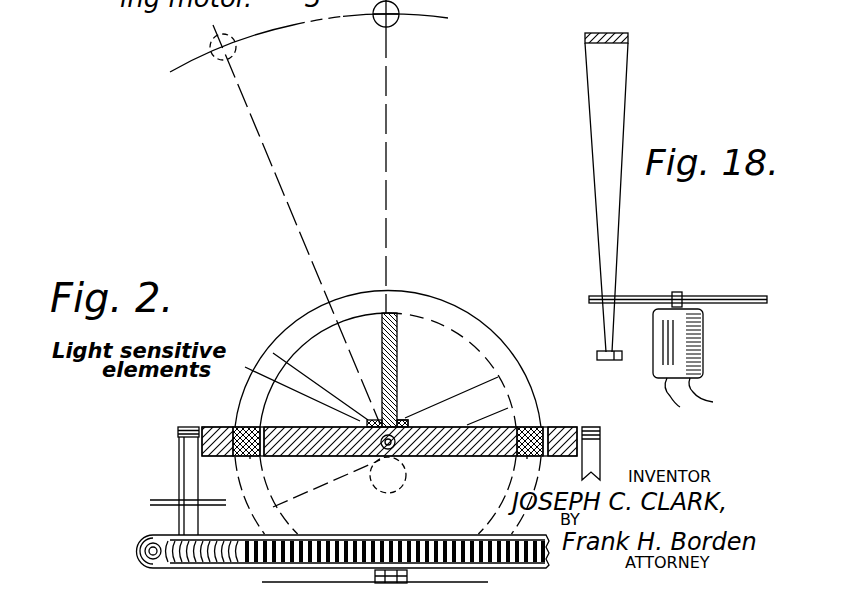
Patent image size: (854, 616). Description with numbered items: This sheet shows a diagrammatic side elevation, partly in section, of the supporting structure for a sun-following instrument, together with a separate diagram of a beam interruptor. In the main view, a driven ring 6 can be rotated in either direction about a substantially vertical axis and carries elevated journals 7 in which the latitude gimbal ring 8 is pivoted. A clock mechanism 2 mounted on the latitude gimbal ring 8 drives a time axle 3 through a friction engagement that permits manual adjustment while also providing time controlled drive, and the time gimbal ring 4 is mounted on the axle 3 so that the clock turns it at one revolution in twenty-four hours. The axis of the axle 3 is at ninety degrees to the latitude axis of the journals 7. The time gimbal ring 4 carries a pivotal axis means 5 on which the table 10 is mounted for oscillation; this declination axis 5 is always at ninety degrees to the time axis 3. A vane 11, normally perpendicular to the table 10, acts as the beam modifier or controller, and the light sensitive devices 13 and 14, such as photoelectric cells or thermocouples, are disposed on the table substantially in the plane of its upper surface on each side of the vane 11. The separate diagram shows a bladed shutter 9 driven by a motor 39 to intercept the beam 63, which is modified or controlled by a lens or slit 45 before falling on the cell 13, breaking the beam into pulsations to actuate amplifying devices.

In FIG. 2, the clock mechanism 2 is at (326, 483).
In FIG. 2, the time axle 3 is at (407, 437).
In FIG. 2, the time gimbal ring 4 is at (245, 427).
In FIG. 2, the pivotal axis means 5 is at (250, 457).
In FIG. 2, the driven ring 6 is at (262, 535).
In FIG. 2, the elevated journals 7 is at (190, 463).
In FIG. 2, the latitude gimbal ring 8 is at (218, 427).
In FIG. 18, the bladed shutter 9 is at (645, 296).
In FIG. 2, the table 10 is at (296, 427).
In FIG. 2, the vane 11 is at (398, 348).
In FIG. 2, the light sensitive device 13 is at (367, 418).
In FIG. 18, the light sensitive device 13 is at (598, 356).
In FIG. 2, the light sensitive device 14 is at (410, 407).
In FIG. 18, the motor 39 is at (707, 343).
In FIG. 18, the lens or slit 45 is at (600, 32).
In FIG. 18, the beam 63 is at (598, 250).